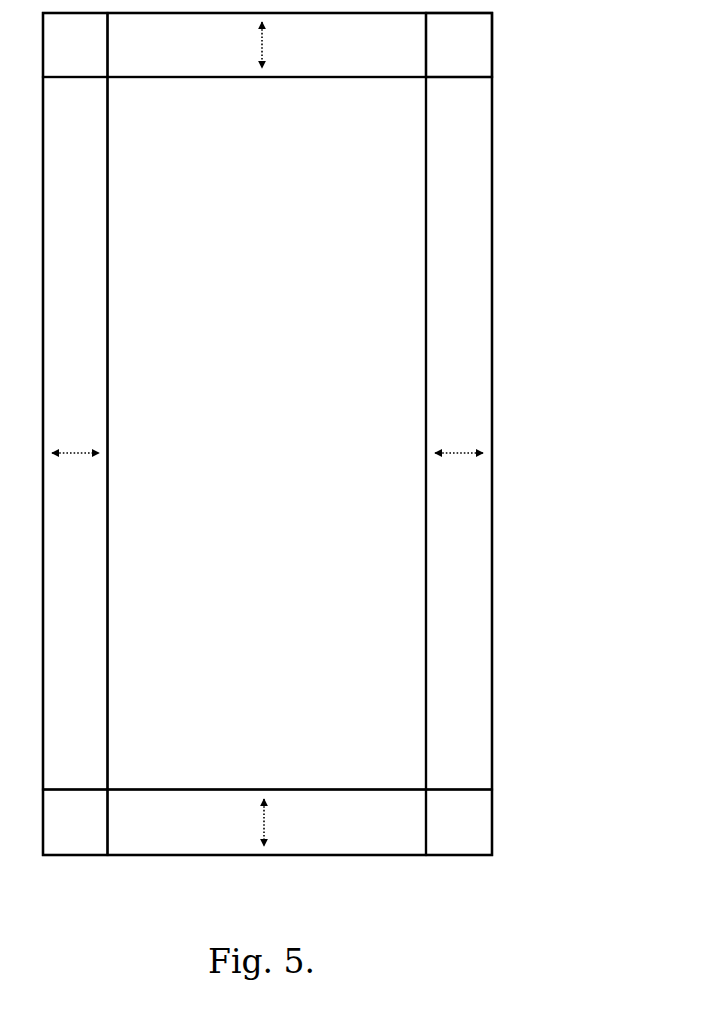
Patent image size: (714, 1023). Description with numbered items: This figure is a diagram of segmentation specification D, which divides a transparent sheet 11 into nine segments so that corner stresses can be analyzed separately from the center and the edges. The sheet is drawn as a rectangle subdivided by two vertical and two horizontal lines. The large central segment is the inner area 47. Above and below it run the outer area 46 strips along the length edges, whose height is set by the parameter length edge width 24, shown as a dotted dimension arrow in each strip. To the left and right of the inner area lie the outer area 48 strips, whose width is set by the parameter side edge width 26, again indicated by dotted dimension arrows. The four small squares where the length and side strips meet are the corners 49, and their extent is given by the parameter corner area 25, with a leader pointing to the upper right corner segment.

The transparent sheet 11 is at (505, 280).
The corner area 25 is at (484, 63).
The length edge width 24 is at (288, 434).
The side edge width 26 is at (267, 436).
The outer area 46 is at (267, 434).
The inner area 47 is at (267, 433).
The outer area 48 is at (267, 433).
The corners 49 is at (267, 434).